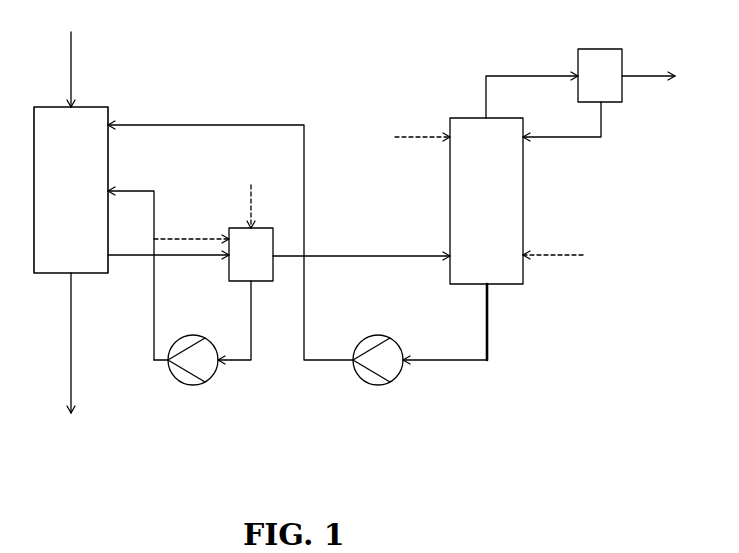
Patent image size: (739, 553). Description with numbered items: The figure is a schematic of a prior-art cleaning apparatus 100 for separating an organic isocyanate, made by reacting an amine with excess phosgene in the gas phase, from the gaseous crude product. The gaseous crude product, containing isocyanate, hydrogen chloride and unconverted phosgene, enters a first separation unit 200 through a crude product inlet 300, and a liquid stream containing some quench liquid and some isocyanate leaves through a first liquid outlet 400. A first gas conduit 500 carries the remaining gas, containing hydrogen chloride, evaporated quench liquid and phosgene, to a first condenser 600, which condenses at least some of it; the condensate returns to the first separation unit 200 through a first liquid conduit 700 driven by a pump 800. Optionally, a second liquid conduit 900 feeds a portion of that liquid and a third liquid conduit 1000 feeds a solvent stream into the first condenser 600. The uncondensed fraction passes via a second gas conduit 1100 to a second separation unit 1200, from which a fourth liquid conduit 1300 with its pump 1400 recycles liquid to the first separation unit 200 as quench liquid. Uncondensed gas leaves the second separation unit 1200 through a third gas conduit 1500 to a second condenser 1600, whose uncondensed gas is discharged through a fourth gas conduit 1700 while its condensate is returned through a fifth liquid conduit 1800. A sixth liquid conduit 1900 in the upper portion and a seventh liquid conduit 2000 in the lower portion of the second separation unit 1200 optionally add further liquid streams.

The cleaning apparatus 100 is at (334, 84).
The first separation unit 200 is at (71, 190).
The crude product inlet 300 is at (86, 69).
The first liquid outlet 400 is at (82, 343).
The first gas conduit 500 is at (168, 246).
The first condenser 600 is at (251, 254).
The first liquid conduit 700 is at (138, 264).
The pump 800 is at (209, 333).
The second liquid conduit 900 is at (191, 230).
The third liquid conduit 1000 is at (266, 206).
The second gas conduit 1100 is at (361, 247).
The second separation unit 1200 is at (486, 201).
The fourth liquid conduit 1300 is at (315, 234).
The pump 1400 is at (378, 360).
The third gas conduit 1500 is at (532, 86).
The second condenser 1600 is at (600, 75).
The fourth gas conduit 1700 is at (648, 67).
The fifth liquid conduit 1800 is at (562, 121).
The sixth liquid conduit 1900 is at (422, 128).
The seventh liquid conduit 2000 is at (553, 246).